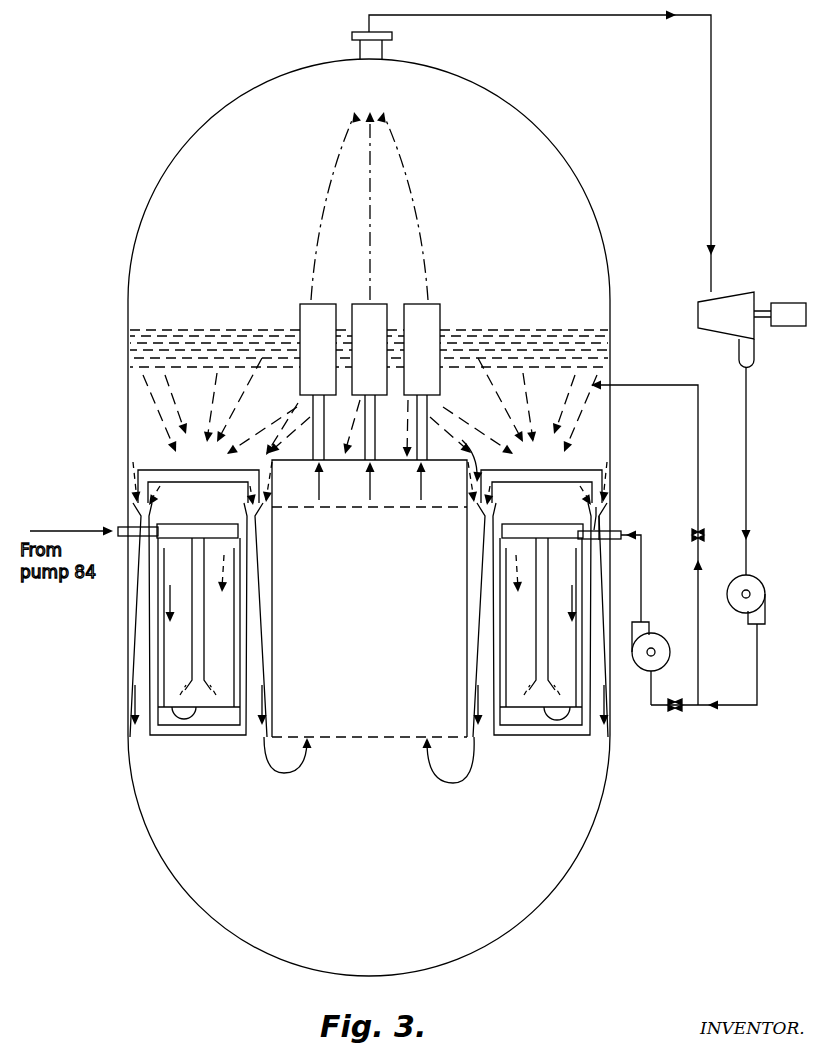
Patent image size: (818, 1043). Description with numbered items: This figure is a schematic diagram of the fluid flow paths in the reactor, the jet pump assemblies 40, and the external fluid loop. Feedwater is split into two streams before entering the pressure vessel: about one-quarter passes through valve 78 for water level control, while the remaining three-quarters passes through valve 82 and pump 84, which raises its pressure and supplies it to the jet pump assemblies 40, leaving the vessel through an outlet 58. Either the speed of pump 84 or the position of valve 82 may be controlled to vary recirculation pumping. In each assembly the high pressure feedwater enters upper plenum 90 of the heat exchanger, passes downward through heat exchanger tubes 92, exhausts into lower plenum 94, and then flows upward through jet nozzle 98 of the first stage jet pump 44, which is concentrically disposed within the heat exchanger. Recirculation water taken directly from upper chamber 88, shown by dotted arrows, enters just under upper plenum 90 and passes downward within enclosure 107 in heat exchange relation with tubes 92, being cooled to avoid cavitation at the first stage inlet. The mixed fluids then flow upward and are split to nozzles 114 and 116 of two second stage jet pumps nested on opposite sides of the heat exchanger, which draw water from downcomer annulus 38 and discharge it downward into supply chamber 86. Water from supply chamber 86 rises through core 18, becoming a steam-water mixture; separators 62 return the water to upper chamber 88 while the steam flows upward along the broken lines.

The core 18 is at (379, 642).
The downcomer annulus 38 is at (606, 519).
The jet pump assemblies 40 is at (116, 472).
The first stage jet pump 44 is at (537, 632).
The outlet pipe 58 is at (623, 541).
The separators 62 is at (306, 318).
The valve 78 is at (702, 530).
The valve 82 is at (679, 711).
The pump 84 is at (664, 667).
The supply chamber 86 is at (387, 869).
The upper chamber 88 is at (278, 404).
The upper plenum 90 is at (486, 532).
The heat exchanger tubes 92 is at (568, 647).
The lower plenum 94 is at (573, 724).
The jet nozzle 98 is at (536, 704).
The enclosure 107 is at (502, 592).
The nozzle 114 is at (604, 490).
The nozzle 116 is at (482, 497).